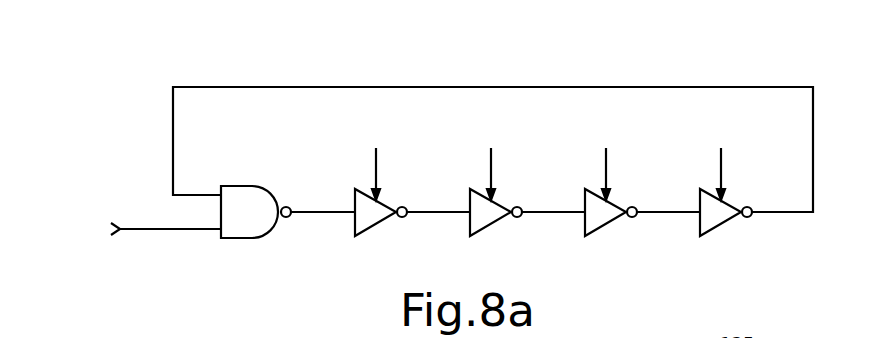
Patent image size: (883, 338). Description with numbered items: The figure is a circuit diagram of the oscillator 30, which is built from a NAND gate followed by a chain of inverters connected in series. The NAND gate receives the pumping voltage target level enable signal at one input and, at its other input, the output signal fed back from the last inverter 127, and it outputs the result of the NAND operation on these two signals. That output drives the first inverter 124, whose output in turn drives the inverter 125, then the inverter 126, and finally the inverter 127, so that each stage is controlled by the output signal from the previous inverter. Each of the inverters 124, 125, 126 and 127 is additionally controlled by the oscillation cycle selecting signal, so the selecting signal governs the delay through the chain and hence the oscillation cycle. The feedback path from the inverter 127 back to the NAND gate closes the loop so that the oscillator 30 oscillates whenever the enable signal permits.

The oscillator 30 is at (423, 130).
The inverter 124 is at (403, 187).
The inverter 125 is at (518, 187).
The inverter 126 is at (633, 187).
The inverter 127 is at (747, 187).